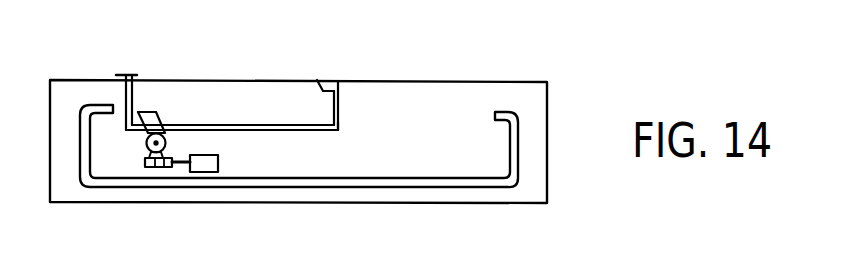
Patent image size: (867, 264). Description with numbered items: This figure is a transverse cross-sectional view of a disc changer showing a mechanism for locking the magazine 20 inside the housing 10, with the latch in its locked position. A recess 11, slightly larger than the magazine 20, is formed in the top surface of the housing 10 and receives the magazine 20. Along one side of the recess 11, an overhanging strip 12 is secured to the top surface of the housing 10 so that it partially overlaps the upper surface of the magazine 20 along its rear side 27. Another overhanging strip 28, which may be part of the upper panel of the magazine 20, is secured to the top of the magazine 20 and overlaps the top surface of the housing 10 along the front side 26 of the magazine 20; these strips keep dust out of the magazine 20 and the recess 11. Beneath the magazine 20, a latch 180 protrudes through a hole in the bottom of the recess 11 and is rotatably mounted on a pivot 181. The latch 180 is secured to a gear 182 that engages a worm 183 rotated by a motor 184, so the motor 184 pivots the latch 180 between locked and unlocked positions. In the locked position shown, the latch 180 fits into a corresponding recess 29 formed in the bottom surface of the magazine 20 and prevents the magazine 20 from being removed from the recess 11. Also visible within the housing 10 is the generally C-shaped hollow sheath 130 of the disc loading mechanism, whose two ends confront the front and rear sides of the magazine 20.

The housing 10 is at (538, 82).
The recess 11 is at (342, 131).
The overhanging strip 12 is at (337, 81).
The magazine 20 is at (288, 99).
The front side 26 is at (127, 102).
The rear side 27 is at (340, 96).
The overhanging strip 28 is at (134, 75).
The recess 29 is at (142, 111).
The sheath 130 is at (520, 145).
The latch 180 is at (161, 120).
The pivot 181 is at (146, 143).
The gear 182 is at (143, 158).
The worm 183 is at (162, 168).
The motor 184 is at (205, 168).